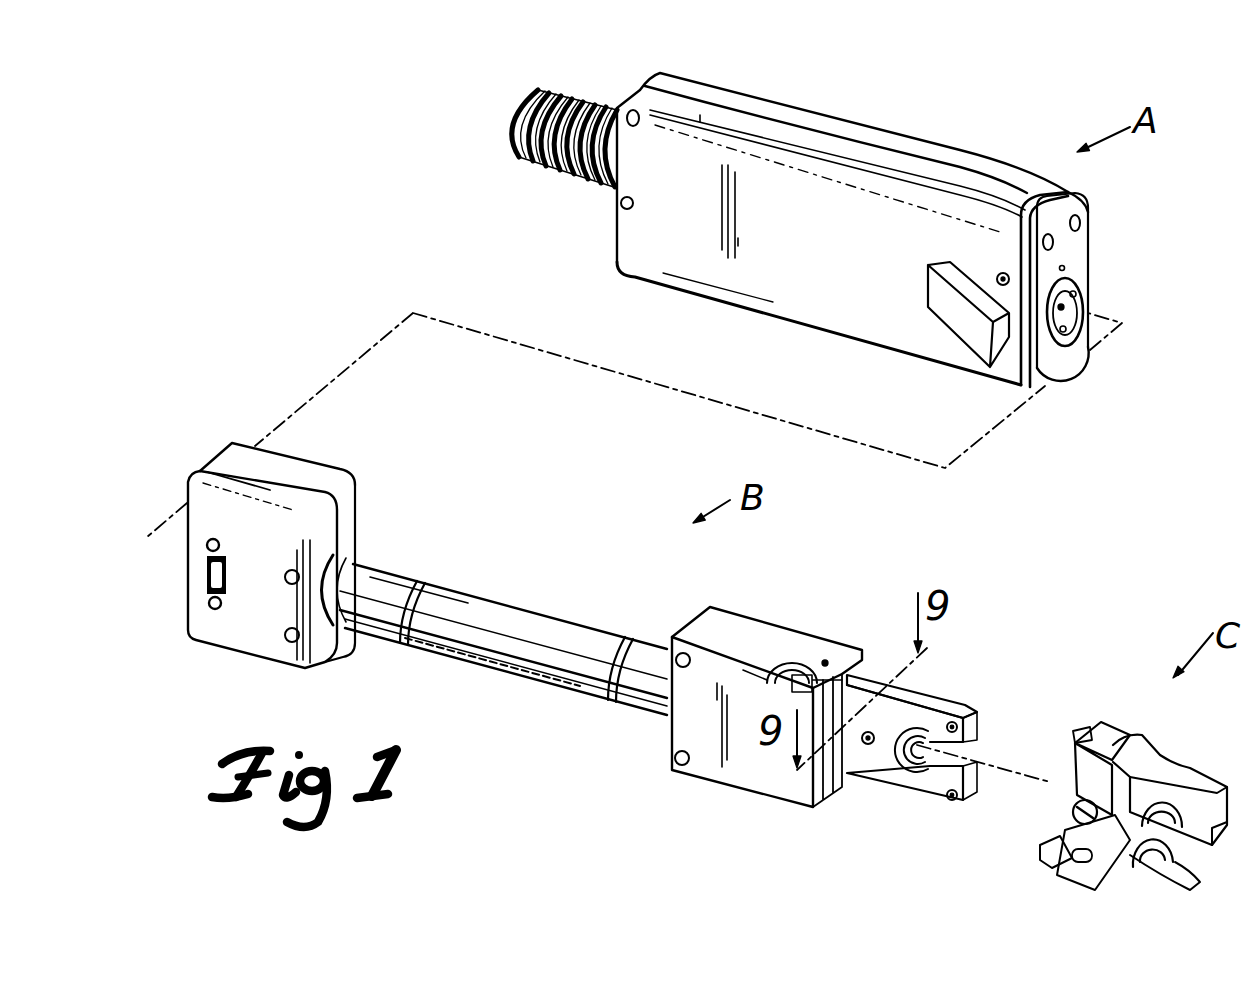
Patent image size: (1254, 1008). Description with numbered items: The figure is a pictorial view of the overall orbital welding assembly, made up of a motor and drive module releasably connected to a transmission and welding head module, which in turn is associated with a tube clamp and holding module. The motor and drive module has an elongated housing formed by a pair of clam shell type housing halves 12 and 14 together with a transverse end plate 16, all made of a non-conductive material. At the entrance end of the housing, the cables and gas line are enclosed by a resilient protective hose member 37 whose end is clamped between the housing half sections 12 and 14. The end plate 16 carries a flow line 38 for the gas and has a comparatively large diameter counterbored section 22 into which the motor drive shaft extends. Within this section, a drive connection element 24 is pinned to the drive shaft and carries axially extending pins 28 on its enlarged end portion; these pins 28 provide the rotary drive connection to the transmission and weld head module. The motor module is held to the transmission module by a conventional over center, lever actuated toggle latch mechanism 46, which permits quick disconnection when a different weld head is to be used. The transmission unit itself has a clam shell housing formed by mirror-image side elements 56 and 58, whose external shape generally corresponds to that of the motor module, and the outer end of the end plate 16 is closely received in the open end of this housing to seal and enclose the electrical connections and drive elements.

The clam shell housing half 12 is at (840, 318).
The clam shell housing half 14 is at (897, 148).
The end plate 16 is at (1080, 238).
The counterbored section 22 is at (1050, 372).
The drive connection element 24 is at (1095, 312).
The axially extending pins 28 is at (1068, 331).
The resilient protective hose member 37 is at (562, 173).
The flow line 38 is at (1121, 272).
The latch mechanism 46 is at (977, 347).
The housing side element 56 is at (272, 650).
The housing side element 58 is at (332, 482).